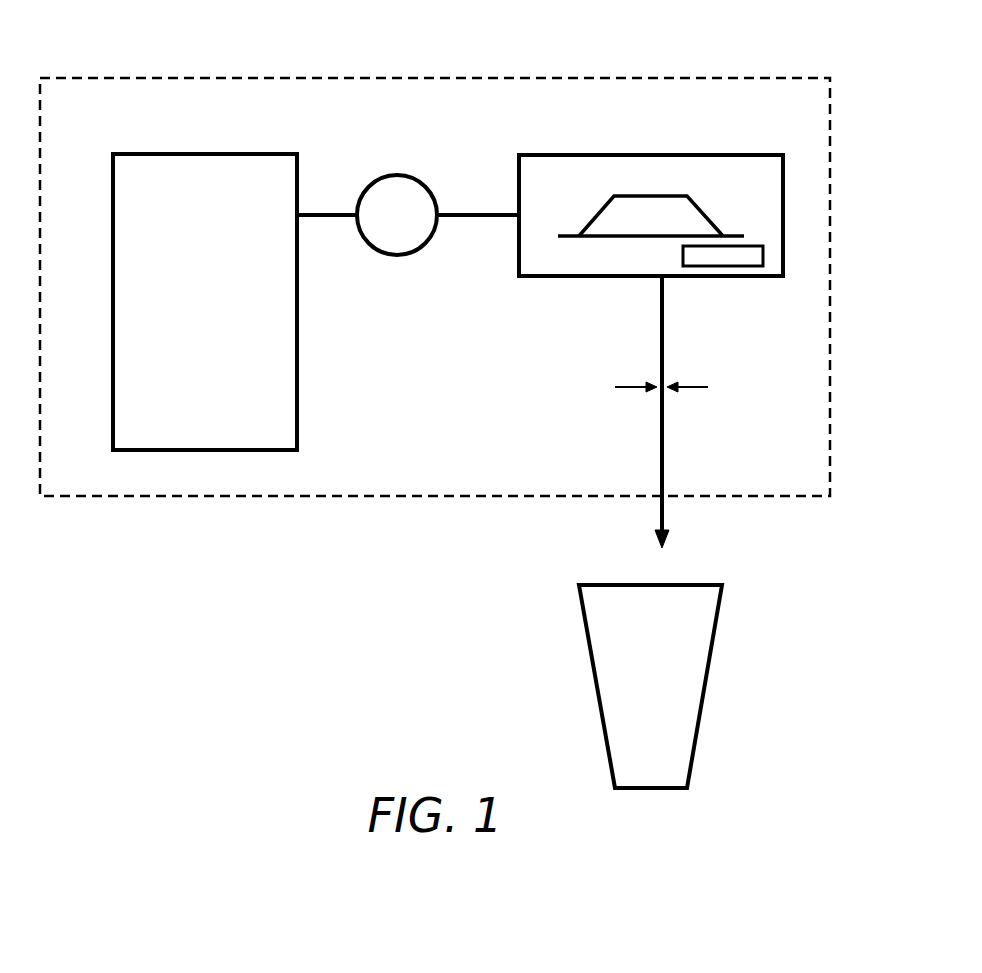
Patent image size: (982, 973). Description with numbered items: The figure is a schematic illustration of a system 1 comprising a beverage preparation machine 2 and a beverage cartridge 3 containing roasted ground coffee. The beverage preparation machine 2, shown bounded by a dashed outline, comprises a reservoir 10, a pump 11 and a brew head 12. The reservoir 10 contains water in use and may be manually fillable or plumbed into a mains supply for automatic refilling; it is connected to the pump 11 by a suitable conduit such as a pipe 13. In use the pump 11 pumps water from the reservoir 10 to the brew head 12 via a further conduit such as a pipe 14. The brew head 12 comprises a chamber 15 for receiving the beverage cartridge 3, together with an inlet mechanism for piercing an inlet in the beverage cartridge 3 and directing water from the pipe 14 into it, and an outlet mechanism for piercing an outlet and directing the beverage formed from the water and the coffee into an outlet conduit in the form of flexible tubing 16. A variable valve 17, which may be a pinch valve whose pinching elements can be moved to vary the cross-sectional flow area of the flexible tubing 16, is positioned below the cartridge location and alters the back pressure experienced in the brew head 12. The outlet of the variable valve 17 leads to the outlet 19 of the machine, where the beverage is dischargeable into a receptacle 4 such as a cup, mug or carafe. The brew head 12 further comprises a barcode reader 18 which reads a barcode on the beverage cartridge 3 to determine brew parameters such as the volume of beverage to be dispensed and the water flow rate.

The system 1 is at (135, 566).
The beverage preparation machine 2 is at (785, 76).
The beverage cartridge 3 is at (612, 196).
The receptacle 4 is at (723, 605).
The reservoir 10 is at (298, 438).
The pump 11 is at (399, 257).
The brew head 12 is at (540, 278).
The pipe 13 is at (325, 213).
The pipe 14 is at (479, 213).
The chamber 15 is at (755, 170).
The flexible tubing 16 is at (660, 340).
The variable valve 17 is at (695, 388).
The barcode reader 18 is at (745, 268).
The outlet 19 is at (663, 520).